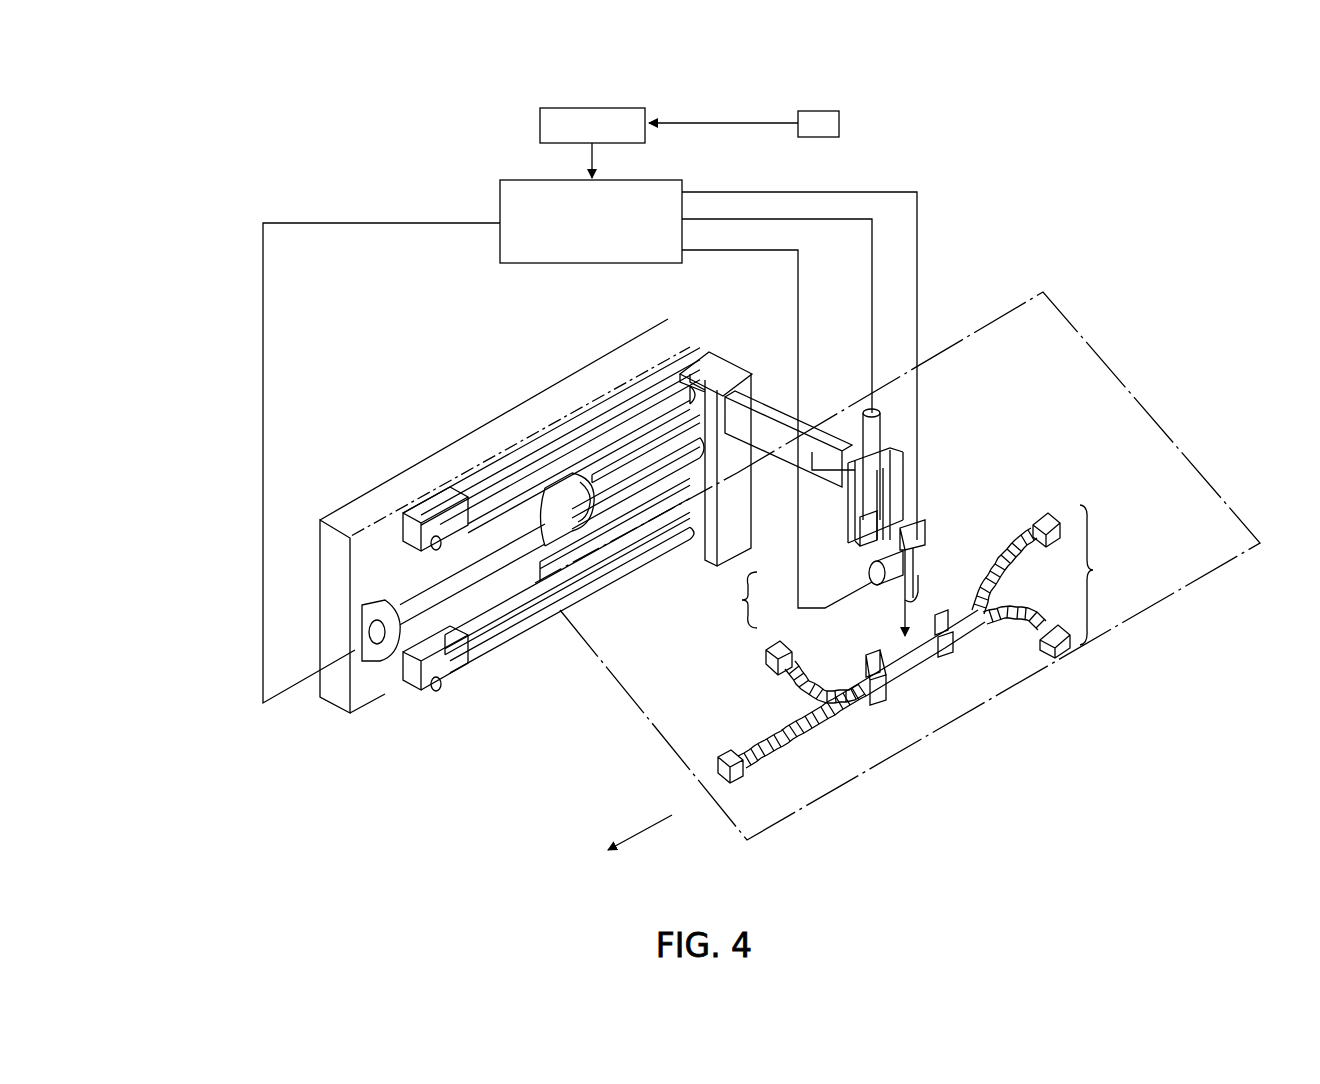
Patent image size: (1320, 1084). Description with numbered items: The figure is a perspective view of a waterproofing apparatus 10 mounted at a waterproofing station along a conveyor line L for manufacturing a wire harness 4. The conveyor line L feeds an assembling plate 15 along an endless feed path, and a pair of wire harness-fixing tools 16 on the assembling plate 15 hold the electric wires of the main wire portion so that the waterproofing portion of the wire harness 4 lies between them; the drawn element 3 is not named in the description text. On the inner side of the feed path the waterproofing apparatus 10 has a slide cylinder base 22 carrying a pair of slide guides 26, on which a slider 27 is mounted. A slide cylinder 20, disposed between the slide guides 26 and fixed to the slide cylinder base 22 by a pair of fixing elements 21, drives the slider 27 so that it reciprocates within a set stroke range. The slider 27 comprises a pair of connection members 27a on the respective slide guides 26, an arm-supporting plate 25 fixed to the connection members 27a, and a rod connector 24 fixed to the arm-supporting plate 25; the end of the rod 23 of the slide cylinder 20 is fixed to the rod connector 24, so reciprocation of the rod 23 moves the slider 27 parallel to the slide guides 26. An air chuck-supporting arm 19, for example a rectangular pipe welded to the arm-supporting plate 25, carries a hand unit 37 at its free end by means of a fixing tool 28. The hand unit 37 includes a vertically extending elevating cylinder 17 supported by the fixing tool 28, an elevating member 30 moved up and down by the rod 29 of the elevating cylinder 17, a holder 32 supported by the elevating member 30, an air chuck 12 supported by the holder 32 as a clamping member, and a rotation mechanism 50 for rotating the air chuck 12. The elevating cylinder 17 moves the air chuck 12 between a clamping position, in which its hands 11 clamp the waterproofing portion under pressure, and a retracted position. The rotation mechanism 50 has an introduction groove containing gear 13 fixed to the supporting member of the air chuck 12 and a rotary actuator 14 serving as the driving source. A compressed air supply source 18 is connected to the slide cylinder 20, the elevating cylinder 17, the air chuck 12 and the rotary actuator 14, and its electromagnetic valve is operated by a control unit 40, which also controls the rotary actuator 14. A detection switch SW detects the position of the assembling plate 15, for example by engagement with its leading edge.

The control unit 40 is at (645, 115).
The detection switch SW is at (840, 122).
The compressed air supply source 18 is at (650, 180).
The waterproofing apparatus 10 is at (928, 222).
The assembling plate 15 is at (1075, 318).
The slide cylinder base 22 is at (378, 692).
The fixing elements 21 is at (523, 482).
The slide guides 26 is at (450, 527).
The rod 23 is at (625, 470).
The rod connector 24 is at (690, 420).
The arm-supporting plate 25 is at (745, 366).
The slide cylinder 20 is at (447, 593).
The slider 27 is at (728, 360).
The connection members 27a is at (715, 378).
The air chuck-supporting arm 19 is at (775, 400).
The fixing tool 28 is at (905, 462).
The rod 29 is at (885, 497).
The elevating member 30 is at (880, 528).
The elevating cylinder 17 is at (876, 430).
The air chuck 12 is at (925, 548).
The hands 11 is at (905, 576).
The rotary actuator 14 is at (870, 565).
The introduction groove containing gear 13 is at (880, 595).
The rotation mechanism 50 is at (732, 600).
The wire harness 3 is at (918, 665).
The holder 32 is at (1005, 565).
The wire harness-fixing tools 16 is at (960, 638).
The wire harness 4 is at (1094, 575).
The hand unit 37 is at (1003, 473).
The conveyor line L is at (640, 824).